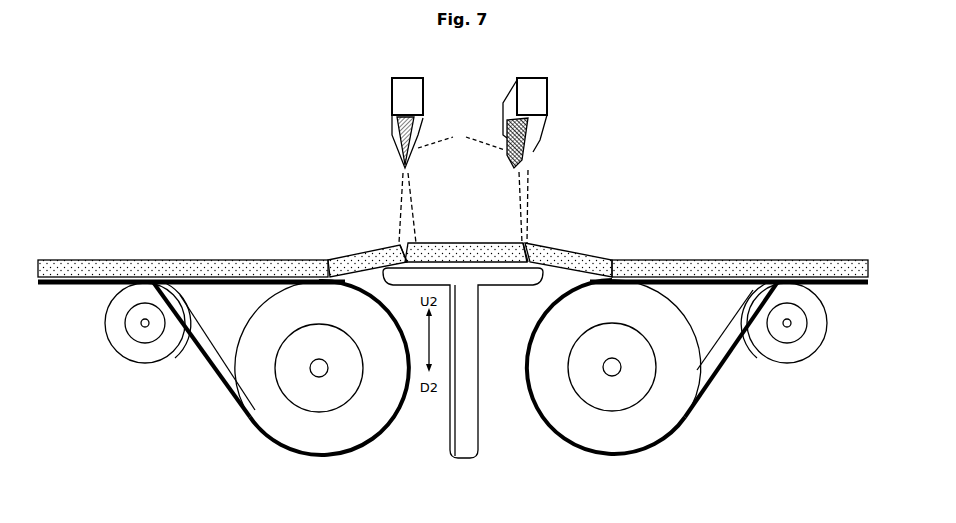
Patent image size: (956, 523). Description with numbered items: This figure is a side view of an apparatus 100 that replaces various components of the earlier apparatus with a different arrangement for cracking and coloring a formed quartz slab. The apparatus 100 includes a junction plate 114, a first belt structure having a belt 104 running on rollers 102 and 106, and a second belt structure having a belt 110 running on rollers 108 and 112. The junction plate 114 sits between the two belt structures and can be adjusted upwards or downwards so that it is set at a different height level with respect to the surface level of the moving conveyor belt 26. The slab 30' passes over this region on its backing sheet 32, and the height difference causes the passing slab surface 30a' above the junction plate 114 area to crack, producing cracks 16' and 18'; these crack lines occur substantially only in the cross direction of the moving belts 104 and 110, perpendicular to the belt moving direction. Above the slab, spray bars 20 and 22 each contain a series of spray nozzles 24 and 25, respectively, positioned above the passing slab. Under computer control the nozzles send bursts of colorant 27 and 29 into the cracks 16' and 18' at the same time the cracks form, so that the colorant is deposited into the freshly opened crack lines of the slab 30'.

The spray bar 20 is at (392, 85).
The spray bar 22 is at (547, 82).
The nozzles 24 is at (401, 149).
The nozzles 25 is at (540, 140).
The colorant 27 is at (400, 210).
The colorant 29 is at (516, 203).
The crack 16' is at (374, 241).
The crack 18' is at (557, 215).
The slab 30' is at (453, 233).
The slab surface 30a' is at (324, 241).
The backing sheet 32 is at (574, 267).
The conveyor belt 26 is at (103, 286).
The apparatus 100 is at (506, 444).
The roller 102 is at (130, 350).
The belt 104 is at (212, 364).
The roller 106 is at (381, 431).
The roller 108 is at (686, 388).
The belt 110 is at (722, 365).
The roller 112 is at (793, 353).
The junction plate 114 is at (482, 272).